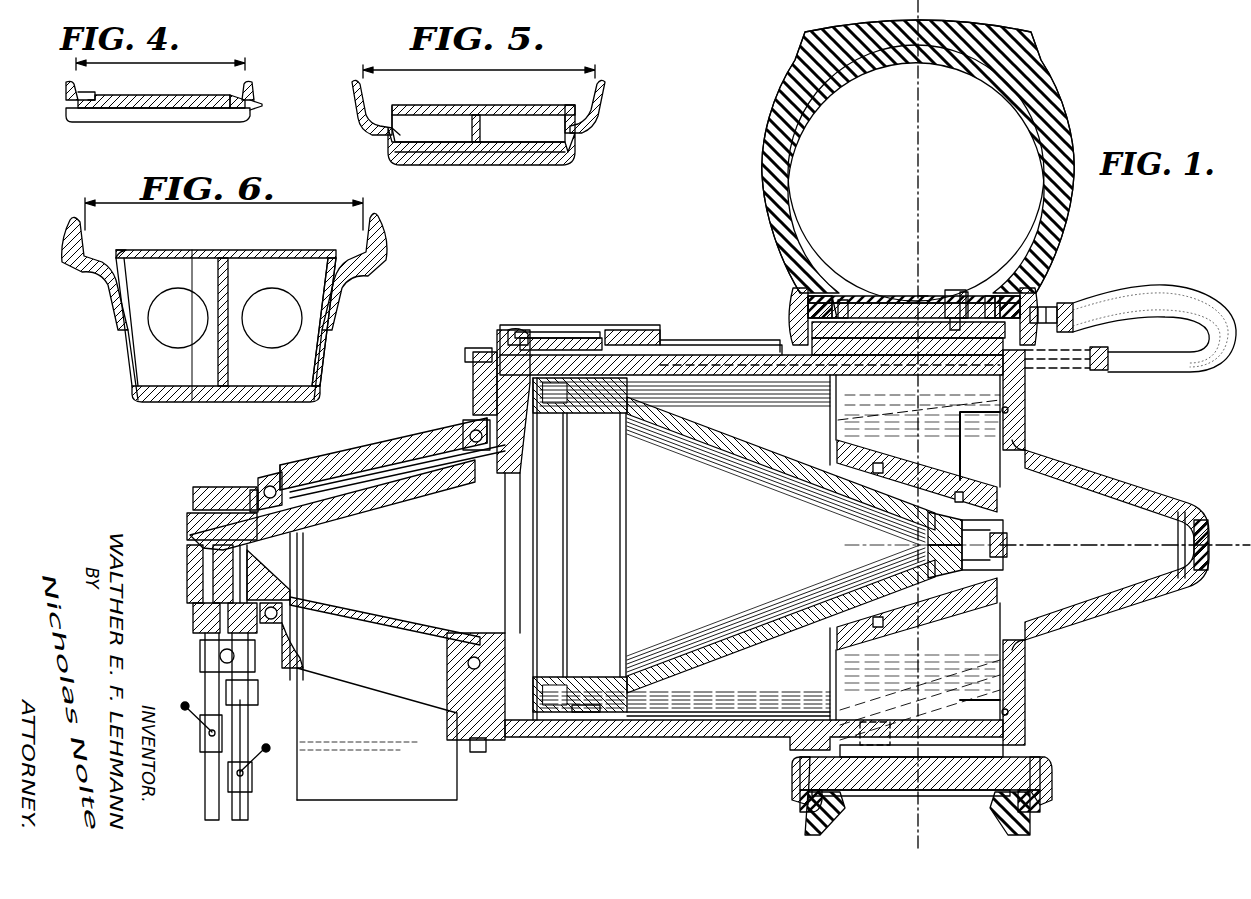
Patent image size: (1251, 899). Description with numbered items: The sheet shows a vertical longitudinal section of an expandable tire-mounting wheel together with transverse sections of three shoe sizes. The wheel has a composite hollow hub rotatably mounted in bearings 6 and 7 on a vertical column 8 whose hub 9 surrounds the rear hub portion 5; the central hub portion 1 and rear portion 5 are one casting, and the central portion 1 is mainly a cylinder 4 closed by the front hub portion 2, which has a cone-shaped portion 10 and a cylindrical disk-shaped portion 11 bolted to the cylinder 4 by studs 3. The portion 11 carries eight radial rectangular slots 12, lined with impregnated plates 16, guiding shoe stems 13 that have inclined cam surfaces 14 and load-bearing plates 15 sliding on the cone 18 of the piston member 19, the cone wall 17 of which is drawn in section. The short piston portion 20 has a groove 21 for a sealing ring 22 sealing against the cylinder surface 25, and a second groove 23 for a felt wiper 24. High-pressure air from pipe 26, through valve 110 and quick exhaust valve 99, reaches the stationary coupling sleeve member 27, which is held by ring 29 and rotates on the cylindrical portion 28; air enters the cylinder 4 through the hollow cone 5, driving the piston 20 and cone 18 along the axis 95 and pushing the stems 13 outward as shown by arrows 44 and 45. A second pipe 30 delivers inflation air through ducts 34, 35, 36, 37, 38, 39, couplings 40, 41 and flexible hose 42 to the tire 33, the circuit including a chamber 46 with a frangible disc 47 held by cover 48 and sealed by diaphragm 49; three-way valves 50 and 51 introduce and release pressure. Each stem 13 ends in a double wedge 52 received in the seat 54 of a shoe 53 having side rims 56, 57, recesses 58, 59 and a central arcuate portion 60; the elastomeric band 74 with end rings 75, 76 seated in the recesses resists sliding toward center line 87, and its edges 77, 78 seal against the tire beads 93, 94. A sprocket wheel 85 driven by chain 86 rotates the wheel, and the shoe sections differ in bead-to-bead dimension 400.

In FIG. 1, the central hub portion 1 is at (700, 306).
In FIG. 1, the front hub portion 2 is at (1150, 438).
In FIG. 1, the studs 3 is at (892, 740).
In FIG. 1, the cylinder 4 is at (755, 360).
In FIG. 1, the rear hub portion 5 is at (408, 440).
In FIG. 1, the bearing 6 is at (274, 480).
In FIG. 1, the bearing 7 is at (480, 658).
In FIG. 1, the vertical column 8 is at (302, 718).
In FIG. 1, the hub of column 9 is at (352, 456).
In FIG. 1, the cone-shaped portion 10 is at (1092, 460).
In FIG. 1, the cylindrical and disk-shaped portion 11 is at (1022, 388).
In FIG. 1, the slots 12 is at (1010, 410).
In FIG. 1, the shoe stems 13 is at (850, 434).
In FIG. 1, the inclined flat cam surfaces 14 is at (924, 500).
In FIG. 1, the load-bearing plates 15 is at (1005, 510).
In FIG. 1, the impregnated plates 16 is at (960, 440).
In FIG. 1, the inner cone 17 is at (742, 440).
In FIG. 1, the cone 18 is at (782, 655).
In FIG. 1, the piston member 19 is at (706, 706).
In FIG. 1, the piston portion 20 is at (540, 690).
In FIG. 1, the circular groove 21 is at (566, 692).
In FIG. 1, the sealing ring 22 is at (562, 740).
In FIG. 1, the second circular groove 23 is at (582, 700).
In FIG. 1, the felt wiper 24 is at (582, 335).
In FIG. 1, the cylinder surface 25 is at (672, 736).
In FIG. 1, the pipe 26 is at (248, 814).
In FIG. 1, the coupling sleeve member 27 is at (195, 618).
In FIG. 1, the cylindrical portion 28 is at (190, 527).
In FIG. 1, the ring 29 is at (190, 512).
In FIG. 1, the second pipe 30 is at (208, 688).
In FIG. 1, the tire 33 is at (778, 132).
In FIG. 1, the duct 34 is at (205, 576).
In FIG. 1, the duct 35 is at (248, 492).
In FIG. 1, the duct 36 is at (490, 392).
In FIG. 1, the duct 37 is at (740, 358).
In FIG. 1, the duct 38 is at (1000, 296).
In FIG. 1, the duct 39 is at (958, 294).
In FIG. 1, the coupling 40 is at (1096, 372).
In FIG. 1, the coupling 41 is at (1068, 318).
In FIG. 1, the flexible hose 42 is at (1174, 300).
In FIG. 1, the arrow 44 is at (900, 420).
In FIG. 1, the arrow 45 is at (905, 705).
In FIG. 1, the chamber 46 is at (620, 332).
In FIG. 1, the frangible disc 47 is at (545, 336).
In FIG. 1, the cover 48 is at (668, 340).
In FIG. 1, the flexible diaphragm 49 is at (552, 340).
In FIG. 1, the three-way valve 50 is at (250, 778).
In FIG. 1, the three-way valve 51 is at (205, 742).
In FIG. 1, the wedge 52 is at (870, 360).
In FIG. 4, the shoe 53 is at (262, 104).
In FIG. 1, the shoe 53 is at (896, 296).
In FIG. 4, the wedge-shaped seat 54 is at (84, 112).
In FIG. 5, the wedge-shaped seat 54 is at (455, 142).
In FIG. 6, the wedge-shaped seat 54 is at (152, 388).
In FIG. 1, the wedge-shaped seat 54 is at (860, 320).
In FIG. 4, the side rim 56 is at (66, 84).
In FIG. 5, the side rim 56 is at (352, 92).
In FIG. 6, the side rim 56 is at (70, 234).
In FIG. 1, the side rim 56 is at (800, 300).
In FIG. 4, the side rim 57 is at (252, 84).
In FIG. 5, the side rim 57 is at (600, 92).
In FIG. 6, the side rim 57 is at (378, 236).
In FIG. 1, the side rim 57 is at (1035, 292).
In FIG. 4, the recess 58 is at (86, 98).
In FIG. 5, the recess 58 is at (380, 108).
In FIG. 6, the recess 58 is at (98, 262).
In FIG. 1, the recess 58 is at (838, 290).
In FIG. 4, the recess 59 is at (236, 98).
In FIG. 5, the recess 59 is at (582, 104).
In FIG. 6, the recess 59 is at (346, 254).
In FIG. 1, the recess 59 is at (1010, 296).
In FIG. 4, the central arcuate portion 60 is at (172, 96).
In FIG. 5, the central arcuate portion 60 is at (500, 105).
In FIG. 6, the central arcuate portion 60 is at (250, 252).
In FIG. 1, the central arcuate portion 60 is at (908, 300).
In FIG. 1, the elastomeric band 74 is at (922, 300).
In FIG. 1, the end ring 75 is at (812, 790).
In FIG. 1, the end ring 76 is at (1042, 776).
In FIG. 1, the circumferential edge portion 77 is at (800, 290).
In FIG. 1, the circumferential edge portion 78 is at (1030, 285).
In FIG. 1, the sprocket wheel 85 is at (468, 368).
In FIG. 1, the chain 86 is at (462, 350).
In FIG. 1, the center line 87 is at (920, 118).
In FIG. 1, the tire bead 93 is at (842, 300).
In FIG. 1, the tire bead 94 is at (988, 296).
In FIG. 1, the longitudinal axis 95 is at (1058, 545).
In FIG. 1, the quick exhaust valve 99 is at (242, 696).
In FIG. 1, the valve 110 is at (200, 656).
In FIG. 4, the bead-to-bead dimension 400 is at (222, 64).
In FIG. 5, the bead-to-bead dimension 400 is at (530, 70).
In FIG. 6, the bead-to-bead dimension 400 is at (285, 208).